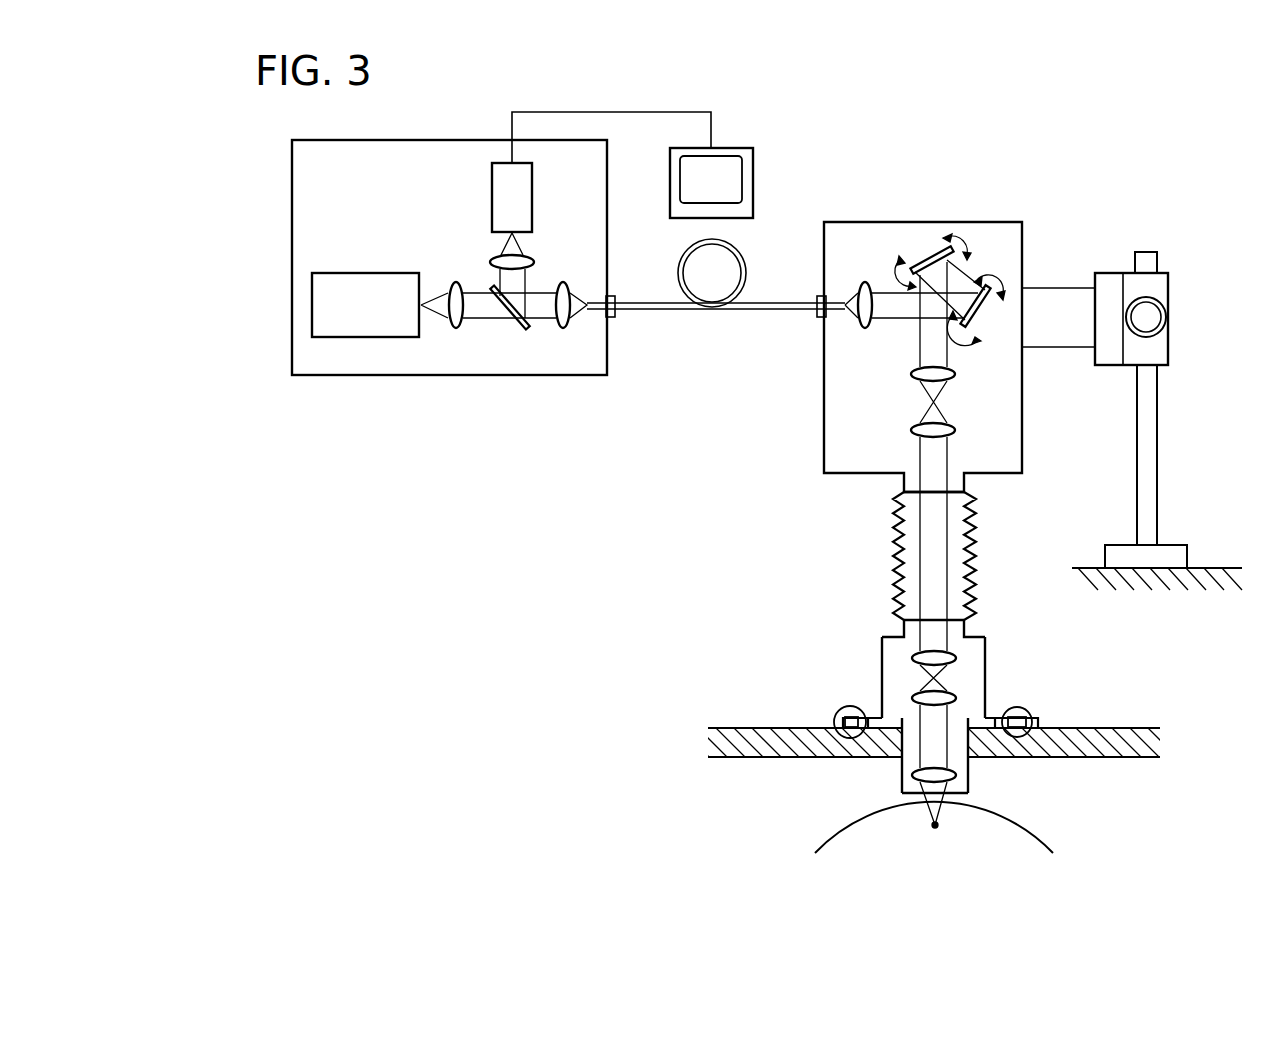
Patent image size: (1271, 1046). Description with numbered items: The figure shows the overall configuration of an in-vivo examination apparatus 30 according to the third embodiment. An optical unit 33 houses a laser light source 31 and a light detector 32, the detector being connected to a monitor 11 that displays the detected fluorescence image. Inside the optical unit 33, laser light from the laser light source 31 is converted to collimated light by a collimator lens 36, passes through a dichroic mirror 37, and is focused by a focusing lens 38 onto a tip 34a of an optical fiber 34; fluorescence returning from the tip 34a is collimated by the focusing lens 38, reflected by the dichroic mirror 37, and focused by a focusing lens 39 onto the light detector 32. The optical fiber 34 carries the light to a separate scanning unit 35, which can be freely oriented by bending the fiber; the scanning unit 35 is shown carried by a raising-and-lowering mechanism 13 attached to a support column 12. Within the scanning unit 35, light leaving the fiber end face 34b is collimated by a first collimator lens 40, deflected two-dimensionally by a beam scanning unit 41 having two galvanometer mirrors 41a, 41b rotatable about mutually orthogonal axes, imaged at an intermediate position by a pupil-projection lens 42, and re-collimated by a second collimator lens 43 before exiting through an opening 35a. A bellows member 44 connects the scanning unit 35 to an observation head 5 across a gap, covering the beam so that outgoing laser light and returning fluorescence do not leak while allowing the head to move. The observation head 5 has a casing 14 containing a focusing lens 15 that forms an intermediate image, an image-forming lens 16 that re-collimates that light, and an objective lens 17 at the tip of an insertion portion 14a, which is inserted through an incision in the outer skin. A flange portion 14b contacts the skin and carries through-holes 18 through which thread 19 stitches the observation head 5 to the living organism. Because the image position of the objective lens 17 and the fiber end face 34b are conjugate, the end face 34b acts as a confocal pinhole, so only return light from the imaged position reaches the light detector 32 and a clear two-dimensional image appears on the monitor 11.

The observation head 5 is at (996, 626).
The monitor 11 is at (732, 147).
The support column 12 is at (1157, 448).
The raising-and-lowering mechanism 13 is at (1168, 340).
The casing 14 is at (882, 647).
The insertion portion 14a is at (900, 787).
The flange portion 14b is at (845, 717).
The focusing lens 15 is at (957, 656).
The image-forming lens 16 is at (951, 693).
The objective lens 17 is at (957, 780).
The through-holes 18 is at (851, 714).
The thread 19 is at (834, 720).
The in-vivo examination apparatus 30 is at (1090, 99).
The laser light source 31 is at (367, 273).
The light detector 32 is at (532, 197).
The optical unit 33 is at (336, 375).
The optical fiber 34 is at (660, 310).
The tip of the optical fiber 34a is at (587, 312).
The end face of the optical fiber 34b is at (843, 302).
The scanning unit 35 is at (1022, 238).
The opening 35a is at (955, 492).
The collimator lens 36 is at (456, 328).
The dichroic mirror 37 is at (518, 328).
The focusing lens 38 is at (563, 328).
The focusing lens 39 is at (534, 260).
The first collimator lens 40 is at (865, 280).
The beam scanning unit 41 is at (983, 249).
The galvanometer mirror 41a is at (983, 312).
The galvanometer mirror 41b is at (927, 233).
The pupil-projection lens 42 is at (957, 372).
The second collimator lens 43 is at (910, 428).
The bellows member 44 is at (975, 557).